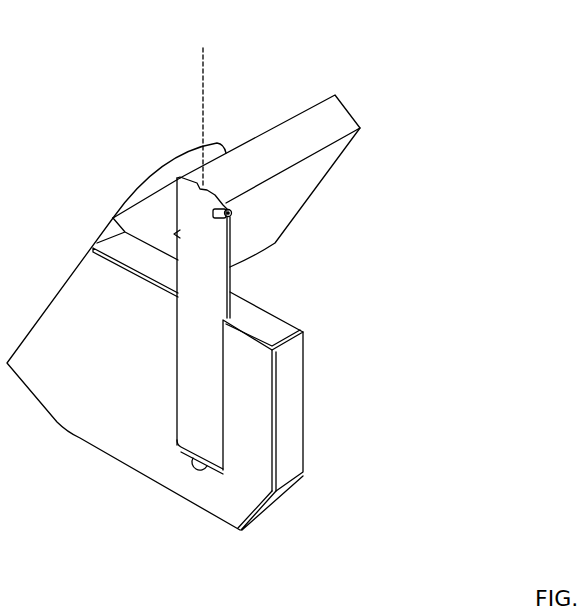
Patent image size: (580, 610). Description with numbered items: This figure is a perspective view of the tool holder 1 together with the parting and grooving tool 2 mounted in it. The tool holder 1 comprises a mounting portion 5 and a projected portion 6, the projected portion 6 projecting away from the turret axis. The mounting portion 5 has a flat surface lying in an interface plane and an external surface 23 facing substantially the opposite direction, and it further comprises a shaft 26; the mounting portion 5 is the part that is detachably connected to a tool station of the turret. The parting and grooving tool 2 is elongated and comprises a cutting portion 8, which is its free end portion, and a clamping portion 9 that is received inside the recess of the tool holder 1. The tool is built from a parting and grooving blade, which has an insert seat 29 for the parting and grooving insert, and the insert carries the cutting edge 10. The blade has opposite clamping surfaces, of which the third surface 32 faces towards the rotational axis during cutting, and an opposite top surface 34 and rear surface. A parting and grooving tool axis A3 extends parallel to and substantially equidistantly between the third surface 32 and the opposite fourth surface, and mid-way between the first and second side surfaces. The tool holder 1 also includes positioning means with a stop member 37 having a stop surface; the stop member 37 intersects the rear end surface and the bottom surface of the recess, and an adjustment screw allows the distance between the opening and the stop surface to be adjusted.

The tool holder 1 is at (115, 427).
The parting and grooving tool 2 is at (213, 255).
The mounting portion 5 is at (320, 128).
The projected portion 6 is at (242, 490).
The cutting portion 8 is at (192, 222).
The clamping portion 9 is at (200, 403).
The cutting edge 10 is at (232, 217).
The external surface 23 is at (297, 192).
The shaft 26 is at (177, 160).
The insert seat 29 is at (14, 46).
The third surface 32 is at (230, 287).
The top surface 34 is at (197, 185).
The stop member 37 is at (198, 465).
The parting and grooving tool axis A3 is at (204, 101).